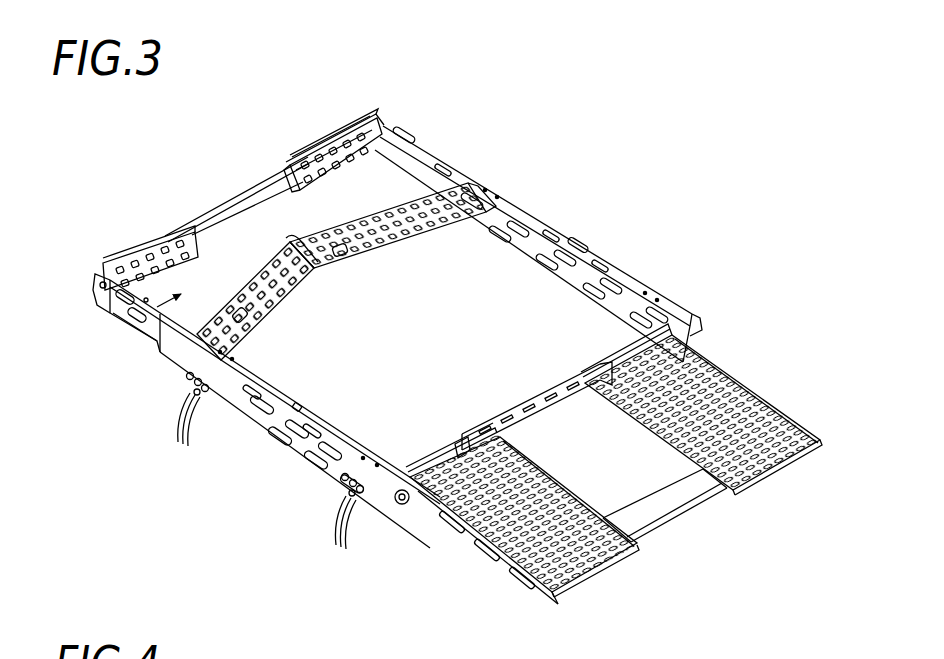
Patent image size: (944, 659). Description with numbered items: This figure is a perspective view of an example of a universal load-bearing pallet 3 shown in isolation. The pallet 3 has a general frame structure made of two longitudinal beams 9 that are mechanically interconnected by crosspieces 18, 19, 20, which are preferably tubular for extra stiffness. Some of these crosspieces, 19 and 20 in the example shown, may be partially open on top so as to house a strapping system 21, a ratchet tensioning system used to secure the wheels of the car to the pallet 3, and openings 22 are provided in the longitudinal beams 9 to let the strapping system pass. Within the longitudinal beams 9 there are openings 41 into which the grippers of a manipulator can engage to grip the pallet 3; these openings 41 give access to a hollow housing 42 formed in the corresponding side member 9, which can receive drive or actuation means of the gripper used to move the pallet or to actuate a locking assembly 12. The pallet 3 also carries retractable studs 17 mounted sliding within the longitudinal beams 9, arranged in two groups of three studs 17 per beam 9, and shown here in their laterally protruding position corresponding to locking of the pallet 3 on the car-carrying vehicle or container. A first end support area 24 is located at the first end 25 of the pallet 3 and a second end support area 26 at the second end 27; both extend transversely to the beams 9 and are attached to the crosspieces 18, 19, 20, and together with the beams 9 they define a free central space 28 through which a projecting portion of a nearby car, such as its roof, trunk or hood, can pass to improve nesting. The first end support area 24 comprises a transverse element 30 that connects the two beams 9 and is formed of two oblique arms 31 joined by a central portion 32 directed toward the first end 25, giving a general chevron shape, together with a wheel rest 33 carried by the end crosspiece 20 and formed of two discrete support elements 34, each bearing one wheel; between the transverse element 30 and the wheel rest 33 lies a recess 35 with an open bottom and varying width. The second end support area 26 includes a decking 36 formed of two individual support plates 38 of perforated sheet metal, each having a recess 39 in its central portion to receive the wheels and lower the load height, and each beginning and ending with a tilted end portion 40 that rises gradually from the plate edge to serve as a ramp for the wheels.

The load-bearing pallet 3 is at (684, 100).
The longitudinal beam 9 is at (521, 207).
The locking assembly 12 is at (168, 376).
The retractable stud 17 is at (269, 482).
The crosspiece 18 is at (663, 503).
The crosspiece 19 is at (537, 410).
The end crosspiece 20 is at (228, 196).
The strapping system 21 is at (318, 140).
The opening 22 is at (95, 280).
The first end support area 24 is at (401, 315).
The first end 25 is at (262, 163).
The second end support area 26 is at (767, 357).
The second end 27 is at (603, 520).
The central space 28 is at (578, 238).
The transverse element 30 is at (346, 274).
The oblique arm 31 is at (402, 222).
The central portion 32 is at (293, 237).
The wheel rest 33 is at (255, 174).
The discrete support element 34 is at (140, 243).
The recess 35 is at (140, 314).
The decking 36 is at (615, 496).
The individual support plate 38 is at (770, 467).
The recess 39 is at (713, 393).
The tilted end portion 40 is at (627, 353).
The opening 41 is at (307, 405).
The hollow housing 42 is at (296, 404).